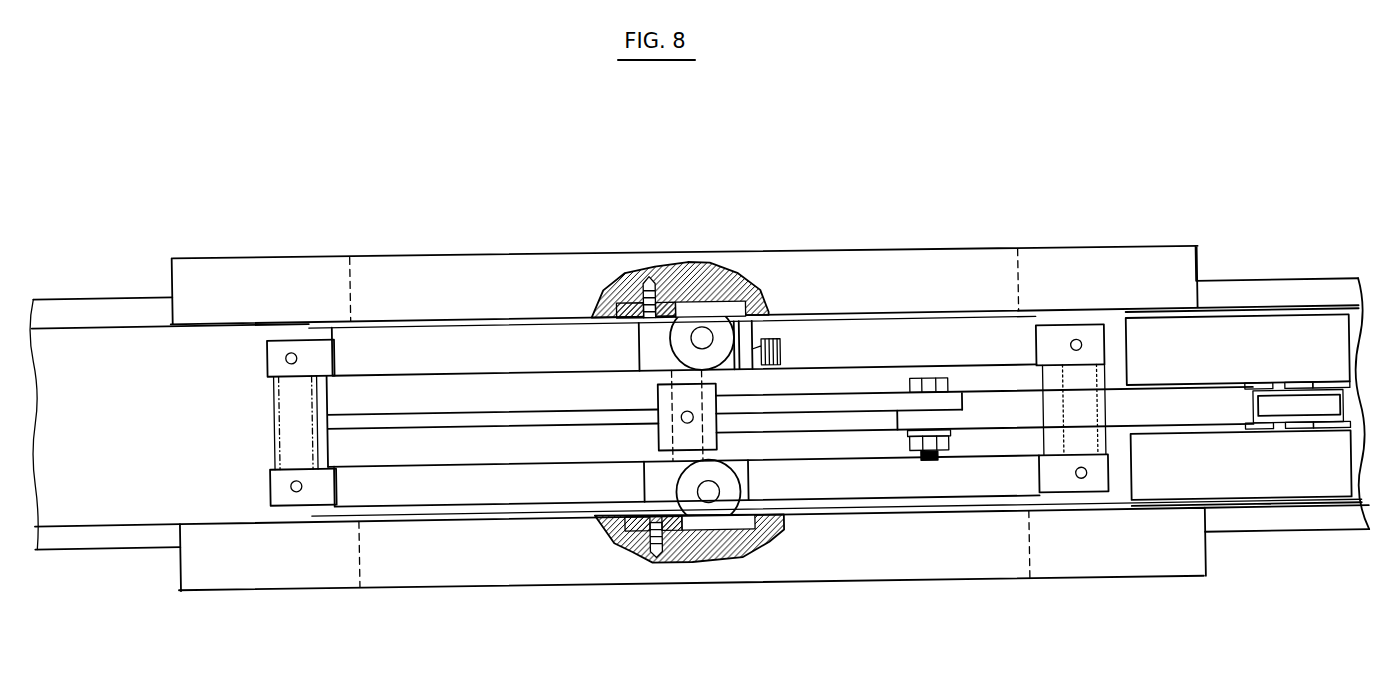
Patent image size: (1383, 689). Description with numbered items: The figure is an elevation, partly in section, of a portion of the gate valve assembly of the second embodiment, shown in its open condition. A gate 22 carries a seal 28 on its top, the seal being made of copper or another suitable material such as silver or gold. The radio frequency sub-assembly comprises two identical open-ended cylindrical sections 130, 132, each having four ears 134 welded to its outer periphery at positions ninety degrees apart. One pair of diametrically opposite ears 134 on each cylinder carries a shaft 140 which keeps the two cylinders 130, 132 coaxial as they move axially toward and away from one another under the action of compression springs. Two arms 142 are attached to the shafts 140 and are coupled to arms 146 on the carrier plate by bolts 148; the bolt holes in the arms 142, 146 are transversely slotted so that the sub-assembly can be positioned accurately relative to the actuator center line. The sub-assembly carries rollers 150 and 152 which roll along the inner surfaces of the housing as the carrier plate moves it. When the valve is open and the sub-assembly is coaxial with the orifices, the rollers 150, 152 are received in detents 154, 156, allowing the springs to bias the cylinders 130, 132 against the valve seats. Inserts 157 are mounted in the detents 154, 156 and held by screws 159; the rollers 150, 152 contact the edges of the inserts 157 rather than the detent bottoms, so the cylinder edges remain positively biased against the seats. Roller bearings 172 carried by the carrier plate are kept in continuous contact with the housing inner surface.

The gate 22 is at (1247, 344).
The seal 28 is at (1168, 328).
The open-ended cylindrical section 130 is at (409, 360).
The open-ended cylindrical section 132 is at (428, 474).
The ears 134 is at (272, 342).
The shaft 140 is at (657, 391).
The arm 142 is at (835, 414).
The arm 146 is at (993, 417).
The bolt 148 is at (928, 382).
The roller 150 is at (707, 318).
The roller 152 is at (708, 512).
The detent 154 is at (737, 273).
The detent 156 is at (744, 524).
The insert 157 is at (668, 300).
The screw 159 is at (652, 277).
The roller bearing 172 is at (1337, 417).